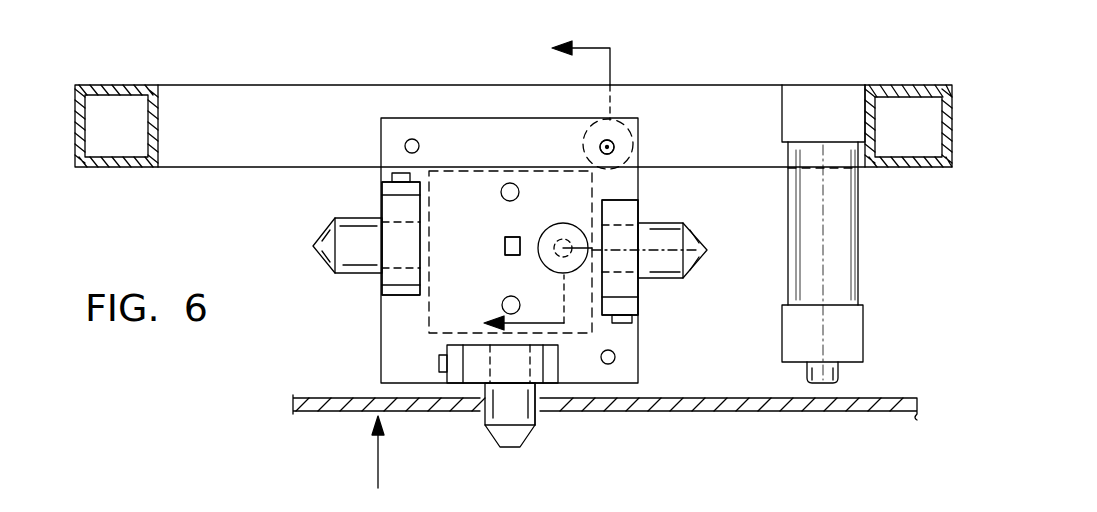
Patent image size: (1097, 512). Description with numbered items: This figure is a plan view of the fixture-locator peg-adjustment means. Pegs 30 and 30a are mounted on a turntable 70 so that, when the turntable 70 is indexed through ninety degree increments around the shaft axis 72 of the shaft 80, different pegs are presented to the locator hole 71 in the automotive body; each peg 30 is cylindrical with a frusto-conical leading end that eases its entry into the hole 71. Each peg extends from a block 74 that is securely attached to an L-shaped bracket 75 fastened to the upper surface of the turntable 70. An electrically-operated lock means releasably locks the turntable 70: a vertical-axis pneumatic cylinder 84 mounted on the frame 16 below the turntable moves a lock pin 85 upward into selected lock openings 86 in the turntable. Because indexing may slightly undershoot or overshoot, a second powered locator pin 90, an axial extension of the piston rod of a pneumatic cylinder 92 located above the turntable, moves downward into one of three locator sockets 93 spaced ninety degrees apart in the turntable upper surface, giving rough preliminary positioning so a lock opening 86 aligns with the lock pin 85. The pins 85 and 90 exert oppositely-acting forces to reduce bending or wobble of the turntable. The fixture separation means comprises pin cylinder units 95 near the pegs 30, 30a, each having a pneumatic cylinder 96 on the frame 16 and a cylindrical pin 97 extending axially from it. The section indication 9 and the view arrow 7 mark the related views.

The frame 16 is at (216, 166).
The turntable 70 is at (380, 345).
The locator hole 71 is at (538, 416).
The shaft axis 72 is at (504, 250).
The block 74 is at (376, 286).
The L-shaped bracket 75 is at (381, 185).
The shaft 80 is at (504, 243).
The pneumatic cylinder 84 is at (640, 128).
The lock pin 85 is at (615, 148).
The lock openings 86 is at (404, 146).
The locator pin 90 is at (708, 250).
The pneumatic cylinder 92 is at (552, 224).
The locator sockets 93 is at (514, 184).
The pin cylinder units 95 is at (820, 86).
The pneumatic cylinder 96 is at (859, 250).
The cylindrical pin 97 is at (840, 372).
The peg 30 is at (485, 420).
The peg 30a is at (318, 242).
The section line 9- 9 is at (537, 184).
The view arrow 7 is at (373, 462).